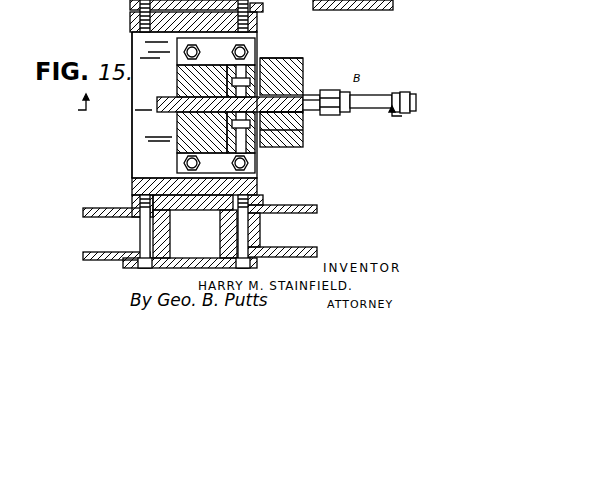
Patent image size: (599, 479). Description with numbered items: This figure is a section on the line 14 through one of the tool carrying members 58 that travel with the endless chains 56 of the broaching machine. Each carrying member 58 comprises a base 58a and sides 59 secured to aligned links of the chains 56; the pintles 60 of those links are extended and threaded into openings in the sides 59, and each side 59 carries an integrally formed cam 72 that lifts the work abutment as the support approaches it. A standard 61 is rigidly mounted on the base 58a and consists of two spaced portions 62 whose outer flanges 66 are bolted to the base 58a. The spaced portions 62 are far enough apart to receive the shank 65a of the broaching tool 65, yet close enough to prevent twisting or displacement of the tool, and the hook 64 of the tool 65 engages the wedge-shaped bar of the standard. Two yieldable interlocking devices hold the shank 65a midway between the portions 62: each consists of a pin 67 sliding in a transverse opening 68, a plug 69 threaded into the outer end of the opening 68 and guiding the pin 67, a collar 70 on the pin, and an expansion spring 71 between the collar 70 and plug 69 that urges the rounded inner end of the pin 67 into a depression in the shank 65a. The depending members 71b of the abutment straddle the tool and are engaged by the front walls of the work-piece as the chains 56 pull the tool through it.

The section line 14 is at (237, 112).
The endless chains 56 is at (93, 250).
The tool carrying member 58 is at (178, 105).
The base 58a is at (135, 113).
The sides 59 is at (137, 20).
The pintles 60 is at (263, 200).
The standard 61 is at (153, 91).
The spaced portions 62 is at (155, 96).
The hook 64 is at (167, 113).
The broaching tool 65 is at (391, 80).
The shank 65a is at (303, 86).
The flanges 66 is at (258, 42).
The pin 67 is at (279, 102).
The opening 68 is at (214, 96).
The plug 69 is at (258, 165).
The collar 70 is at (303, 133).
The expansion spring 71 is at (303, 143).
The depending member 71b is at (305, 58).
The cam 72 is at (202, 210).